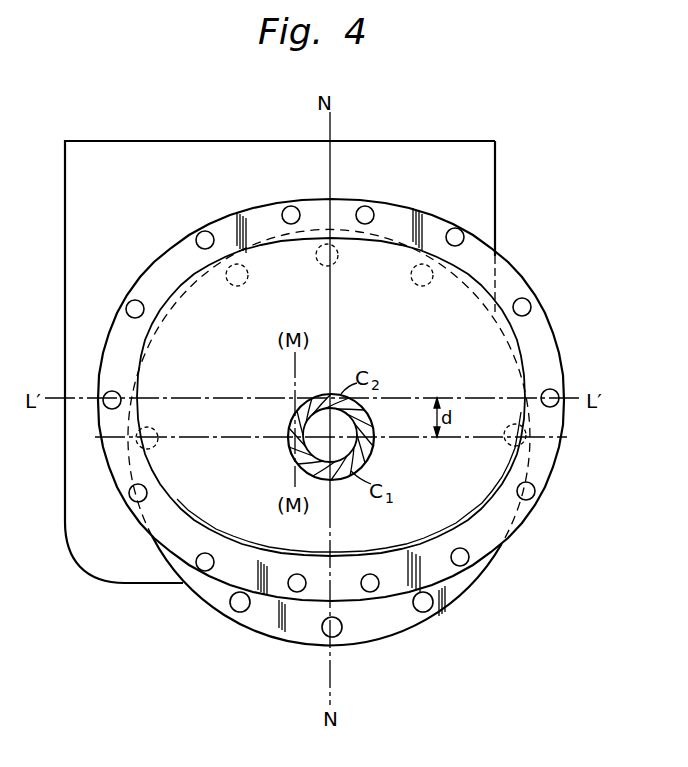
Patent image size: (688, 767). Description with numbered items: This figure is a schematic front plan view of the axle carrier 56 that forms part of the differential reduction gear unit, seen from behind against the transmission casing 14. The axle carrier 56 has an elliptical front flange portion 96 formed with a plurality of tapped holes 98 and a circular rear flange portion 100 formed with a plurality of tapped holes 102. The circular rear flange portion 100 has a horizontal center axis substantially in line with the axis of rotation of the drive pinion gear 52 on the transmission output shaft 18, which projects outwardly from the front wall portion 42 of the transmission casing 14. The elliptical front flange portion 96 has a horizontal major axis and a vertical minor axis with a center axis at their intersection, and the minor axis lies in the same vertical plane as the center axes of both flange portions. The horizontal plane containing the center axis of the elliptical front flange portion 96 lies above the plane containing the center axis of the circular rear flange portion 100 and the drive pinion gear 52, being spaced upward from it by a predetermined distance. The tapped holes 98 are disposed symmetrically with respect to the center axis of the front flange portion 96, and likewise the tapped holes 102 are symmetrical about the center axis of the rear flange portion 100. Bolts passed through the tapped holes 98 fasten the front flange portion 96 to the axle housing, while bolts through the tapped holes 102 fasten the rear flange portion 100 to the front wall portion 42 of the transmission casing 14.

The front wall portion 42 is at (113, 194).
The transmission casing 14 is at (496, 190).
The axle carrier 56 is at (537, 288).
The tapped holes 98 is at (197, 244).
The tapped holes 102 is at (318, 259).
The transmission output shaft 18 is at (371, 418).
The drive pinion gear 52 is at (370, 452).
The elliptical front flange portion 96 is at (453, 590).
The circular rear flange portion 100 is at (391, 637).